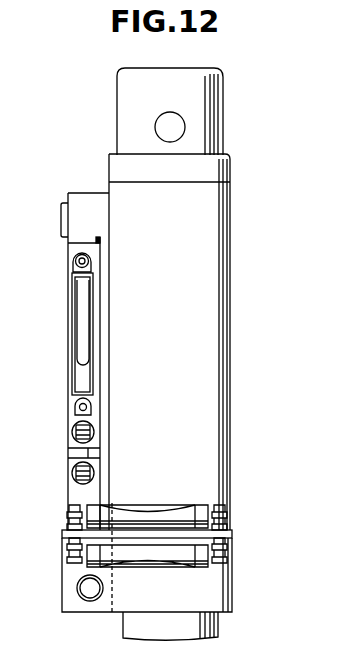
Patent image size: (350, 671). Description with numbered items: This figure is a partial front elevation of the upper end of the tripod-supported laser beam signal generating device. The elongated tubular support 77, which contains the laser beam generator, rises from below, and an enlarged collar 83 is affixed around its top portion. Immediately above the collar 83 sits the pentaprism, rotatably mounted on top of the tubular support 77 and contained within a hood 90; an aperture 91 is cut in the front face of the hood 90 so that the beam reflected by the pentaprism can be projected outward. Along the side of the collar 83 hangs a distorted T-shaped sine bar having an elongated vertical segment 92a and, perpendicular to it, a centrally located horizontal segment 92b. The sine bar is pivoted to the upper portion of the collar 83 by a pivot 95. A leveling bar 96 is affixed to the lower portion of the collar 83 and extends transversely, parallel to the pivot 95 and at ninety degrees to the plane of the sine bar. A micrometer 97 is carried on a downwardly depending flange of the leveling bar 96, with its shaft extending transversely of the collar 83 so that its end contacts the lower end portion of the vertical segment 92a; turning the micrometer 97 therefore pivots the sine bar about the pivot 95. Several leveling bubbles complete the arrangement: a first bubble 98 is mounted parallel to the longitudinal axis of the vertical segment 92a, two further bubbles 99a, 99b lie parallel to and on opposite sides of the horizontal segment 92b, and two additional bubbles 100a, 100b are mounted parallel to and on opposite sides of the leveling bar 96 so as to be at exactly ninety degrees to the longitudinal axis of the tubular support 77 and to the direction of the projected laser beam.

The hood 90 is at (128, 78).
The aperture 91 is at (155, 127).
The collar 83 is at (208, 252).
The pivot 95 is at (60, 223).
The first bubble 98 is at (73, 291).
The vertical segment 92a is at (72, 410).
The leveling bubble 99a is at (72, 430).
The horizontal segment 92b is at (85, 456).
The leveling bubble 99b is at (72, 478).
The leveling bar 96 is at (235, 536).
The leveling bubble 100a is at (178, 506).
The leveling bubble 100b is at (185, 558).
The micrometer 97 is at (75, 590).
The tubular support 77 is at (128, 630).